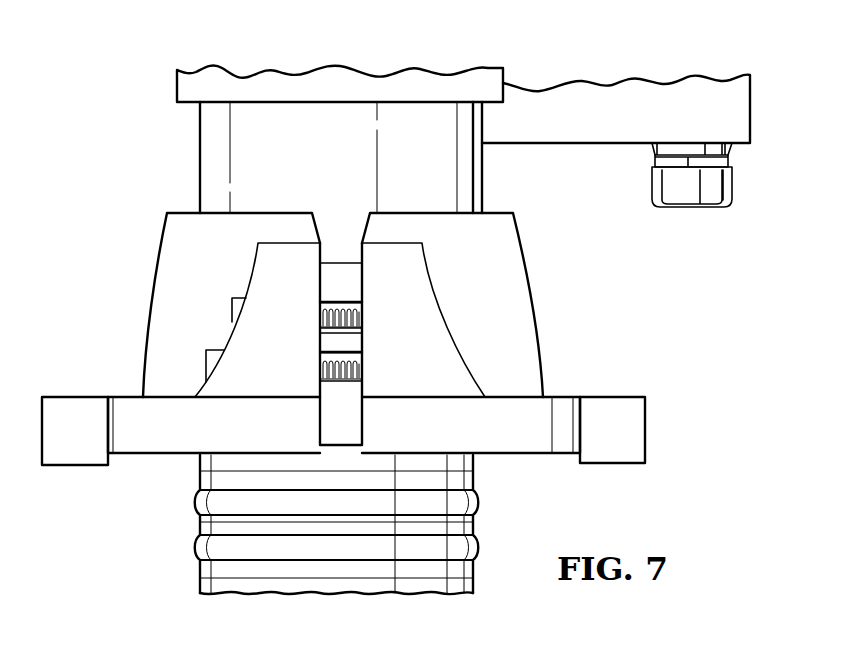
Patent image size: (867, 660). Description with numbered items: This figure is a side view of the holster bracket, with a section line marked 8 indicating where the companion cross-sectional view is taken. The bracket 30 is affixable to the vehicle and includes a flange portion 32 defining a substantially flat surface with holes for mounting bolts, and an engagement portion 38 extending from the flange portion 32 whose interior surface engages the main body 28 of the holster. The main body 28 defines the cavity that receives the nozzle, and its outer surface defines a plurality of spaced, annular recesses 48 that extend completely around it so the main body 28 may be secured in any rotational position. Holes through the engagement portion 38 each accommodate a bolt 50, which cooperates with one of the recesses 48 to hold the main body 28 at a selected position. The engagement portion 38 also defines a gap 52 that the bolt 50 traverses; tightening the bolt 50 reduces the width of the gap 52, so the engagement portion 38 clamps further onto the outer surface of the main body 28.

The section line 8- 8 is at (342, 35).
The main body 28 is at (496, 180).
The bracket 30 is at (556, 325).
The flange portion 32 is at (130, 397).
The engagement portion 38 is at (530, 257).
The recesses 48 is at (333, 303).
The bolt 50 is at (751, 105).
The gap 52 is at (323, 215).